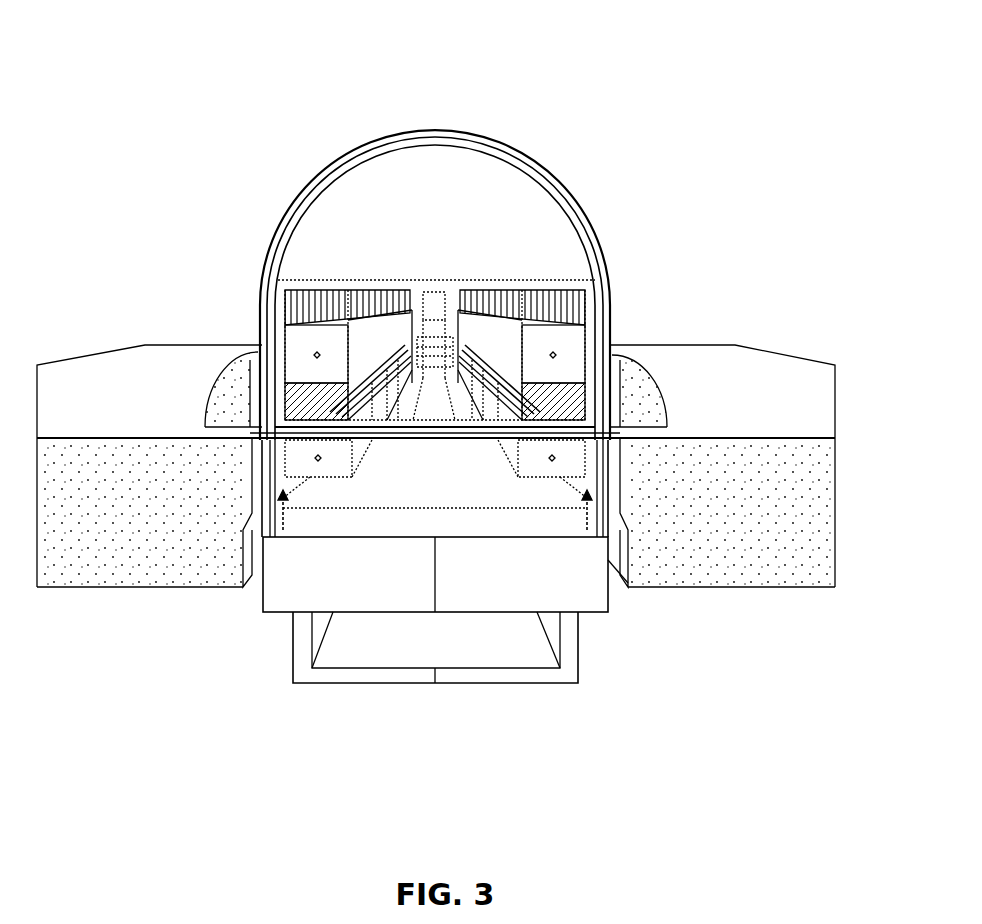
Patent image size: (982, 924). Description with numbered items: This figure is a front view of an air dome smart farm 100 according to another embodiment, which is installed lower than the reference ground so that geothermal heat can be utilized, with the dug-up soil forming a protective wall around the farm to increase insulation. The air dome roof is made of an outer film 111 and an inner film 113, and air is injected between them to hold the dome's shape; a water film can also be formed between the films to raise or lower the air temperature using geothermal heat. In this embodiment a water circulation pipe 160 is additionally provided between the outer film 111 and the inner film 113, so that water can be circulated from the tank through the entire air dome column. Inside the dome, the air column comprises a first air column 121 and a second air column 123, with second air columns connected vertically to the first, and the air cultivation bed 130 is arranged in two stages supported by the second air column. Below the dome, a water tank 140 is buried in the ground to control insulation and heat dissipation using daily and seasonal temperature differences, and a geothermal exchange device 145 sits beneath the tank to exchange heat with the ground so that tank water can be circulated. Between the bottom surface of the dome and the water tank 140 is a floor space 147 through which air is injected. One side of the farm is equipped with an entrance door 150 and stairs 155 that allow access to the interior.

The air dome smart farm 100 is at (122, 61).
The outer film 111 is at (353, 148).
The inner film 113 is at (297, 202).
The first air column 121 is at (290, 287).
The second air column 123 is at (292, 315).
The air cultivation bed 130 is at (298, 352).
The water tank 140 is at (283, 597).
The geothermal exchange device 145 is at (300, 668).
The floor space 147 is at (542, 527).
The entrance door 150 is at (437, 310).
The stairs 155 is at (450, 350).
The water circulation pipe 160 is at (533, 160).